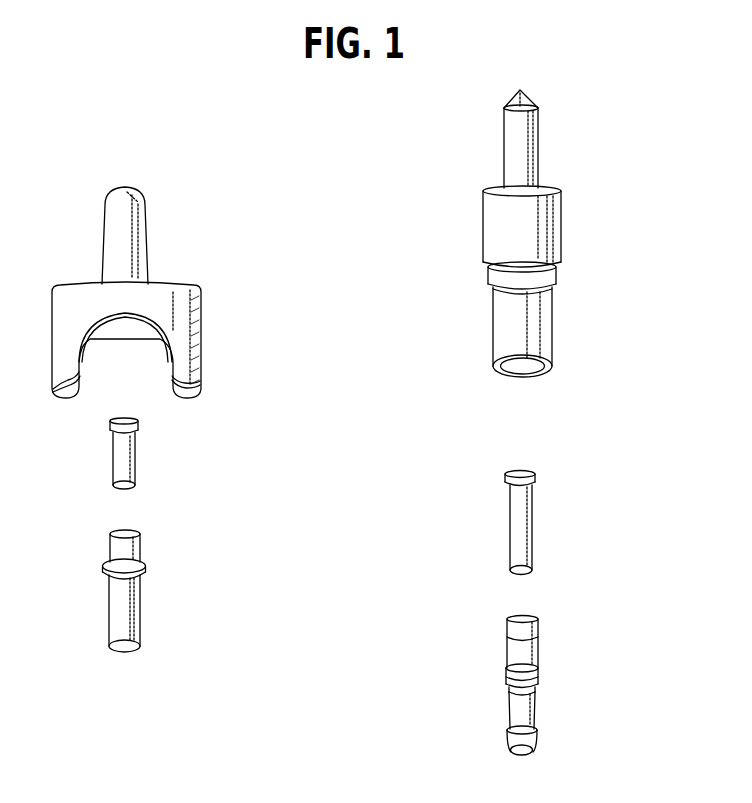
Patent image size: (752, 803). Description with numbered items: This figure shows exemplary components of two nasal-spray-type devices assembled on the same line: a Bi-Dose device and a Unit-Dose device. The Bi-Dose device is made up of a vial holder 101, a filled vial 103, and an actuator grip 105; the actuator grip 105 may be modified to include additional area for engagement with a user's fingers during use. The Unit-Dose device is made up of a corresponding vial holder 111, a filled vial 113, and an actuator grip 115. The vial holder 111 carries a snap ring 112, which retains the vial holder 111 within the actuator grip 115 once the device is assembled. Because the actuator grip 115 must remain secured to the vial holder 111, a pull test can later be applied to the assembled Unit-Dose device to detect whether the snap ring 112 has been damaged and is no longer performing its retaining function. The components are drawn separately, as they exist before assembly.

The vial holder 101 is at (538, 660).
The filled vial 103 is at (533, 525).
The actuator grip 105 is at (562, 223).
The vial holder 111 is at (189, 598).
The snap ring 112 is at (148, 568).
The filled vial 113 is at (135, 462).
The actuator grip 115 is at (203, 333).